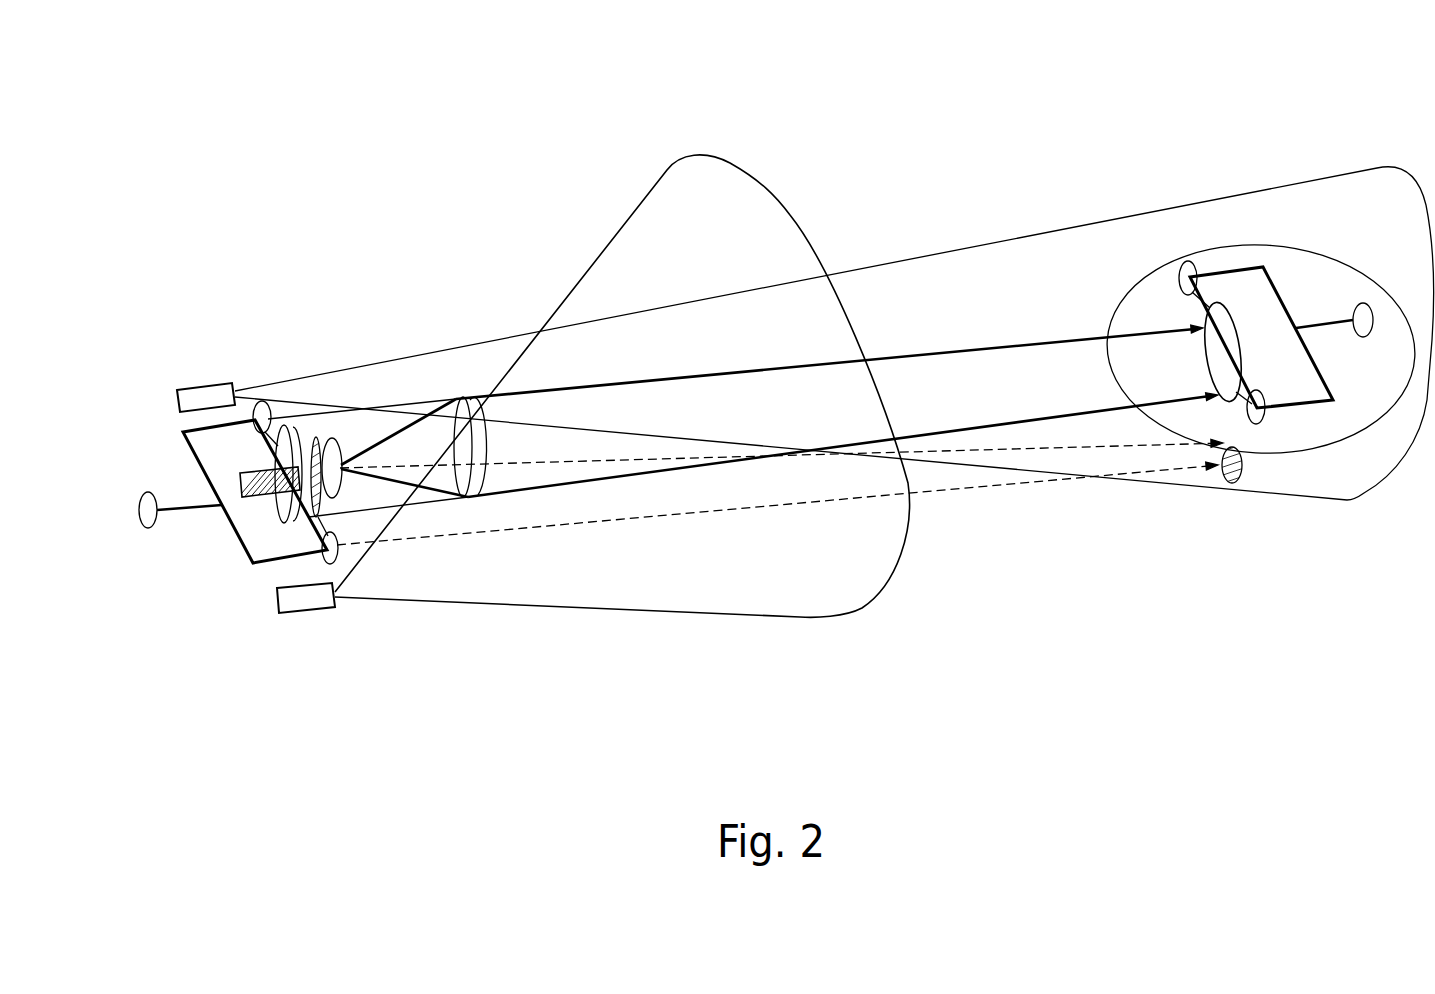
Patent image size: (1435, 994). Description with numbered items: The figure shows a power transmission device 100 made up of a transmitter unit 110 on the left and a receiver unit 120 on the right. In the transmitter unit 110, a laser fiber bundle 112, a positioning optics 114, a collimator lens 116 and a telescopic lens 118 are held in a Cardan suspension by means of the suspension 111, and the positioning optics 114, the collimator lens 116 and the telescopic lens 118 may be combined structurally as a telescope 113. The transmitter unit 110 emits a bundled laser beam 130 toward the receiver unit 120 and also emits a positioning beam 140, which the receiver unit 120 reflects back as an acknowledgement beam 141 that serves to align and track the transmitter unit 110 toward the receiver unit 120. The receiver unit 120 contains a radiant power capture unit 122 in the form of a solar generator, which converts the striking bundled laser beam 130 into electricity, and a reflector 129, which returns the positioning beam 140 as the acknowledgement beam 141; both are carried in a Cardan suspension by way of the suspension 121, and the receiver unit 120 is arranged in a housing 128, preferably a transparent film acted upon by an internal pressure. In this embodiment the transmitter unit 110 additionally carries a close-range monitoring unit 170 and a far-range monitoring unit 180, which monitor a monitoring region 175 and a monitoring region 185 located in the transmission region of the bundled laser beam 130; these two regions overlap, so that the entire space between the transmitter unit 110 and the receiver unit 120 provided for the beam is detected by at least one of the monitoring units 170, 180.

The power transmission device 100 is at (312, 212).
The transmitter unit 110 is at (176, 372).
The suspension 111 is at (200, 470).
The laser fiber bundle 112 is at (240, 497).
The telescope 113 is at (340, 412).
The positioning optics 114 is at (322, 497).
The collimator lens 116 is at (344, 476).
The telescopic lens 118 is at (473, 448).
The receiver unit 120 is at (1329, 604).
The suspension 121 is at (1290, 312).
The radiant power capture unit 122 is at (1207, 365).
The housing 128 is at (1320, 454).
The reflector 129 is at (1225, 482).
The bundled laser beam 130 is at (892, 357).
The positioning beam 140 is at (1093, 453).
The acknowledgement beam 141 is at (998, 483).
The close-range monitoring unit 170 is at (303, 600).
The monitoring region 175 is at (873, 607).
The far-range monitoring unit 180 is at (216, 394).
The monitoring region 185 is at (1207, 201).